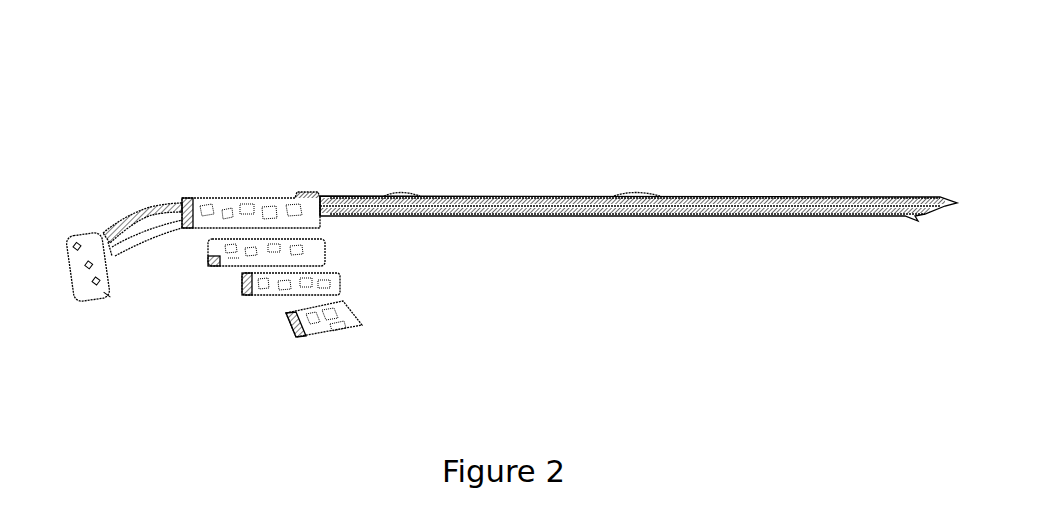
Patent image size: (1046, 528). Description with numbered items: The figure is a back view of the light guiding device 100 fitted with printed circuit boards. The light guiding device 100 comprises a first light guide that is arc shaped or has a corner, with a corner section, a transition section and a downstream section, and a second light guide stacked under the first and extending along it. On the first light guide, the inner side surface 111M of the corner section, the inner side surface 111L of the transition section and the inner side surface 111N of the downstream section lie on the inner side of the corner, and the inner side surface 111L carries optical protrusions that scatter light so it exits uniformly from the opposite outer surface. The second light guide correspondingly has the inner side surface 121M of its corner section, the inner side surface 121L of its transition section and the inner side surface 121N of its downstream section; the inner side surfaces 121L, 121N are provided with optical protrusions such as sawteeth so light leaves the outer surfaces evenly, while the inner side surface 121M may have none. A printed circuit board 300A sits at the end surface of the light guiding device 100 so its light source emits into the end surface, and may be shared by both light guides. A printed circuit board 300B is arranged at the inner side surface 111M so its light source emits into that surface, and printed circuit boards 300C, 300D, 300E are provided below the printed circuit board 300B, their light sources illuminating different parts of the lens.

The light guiding device 100 is at (368, 108).
The inner side surface of the transition section 111L is at (440, 196).
The inner side surface of the corner section 111M is at (136, 215).
The inner side surface of the downstream section 111N is at (605, 196).
The inner side surface of the transition section of the second light guide 121L is at (458, 218).
The inner side surface of the corner section of the second light guide 121M is at (150, 233).
The inner side surface of the downstream section of the second light guide 121N is at (612, 219).
The printed circuit board 300A is at (108, 302).
The printed circuit board 300B is at (280, 168).
The printed circuit board 300C is at (331, 246).
The printed circuit board 300D is at (343, 282).
The printed circuit board 300E is at (365, 319).